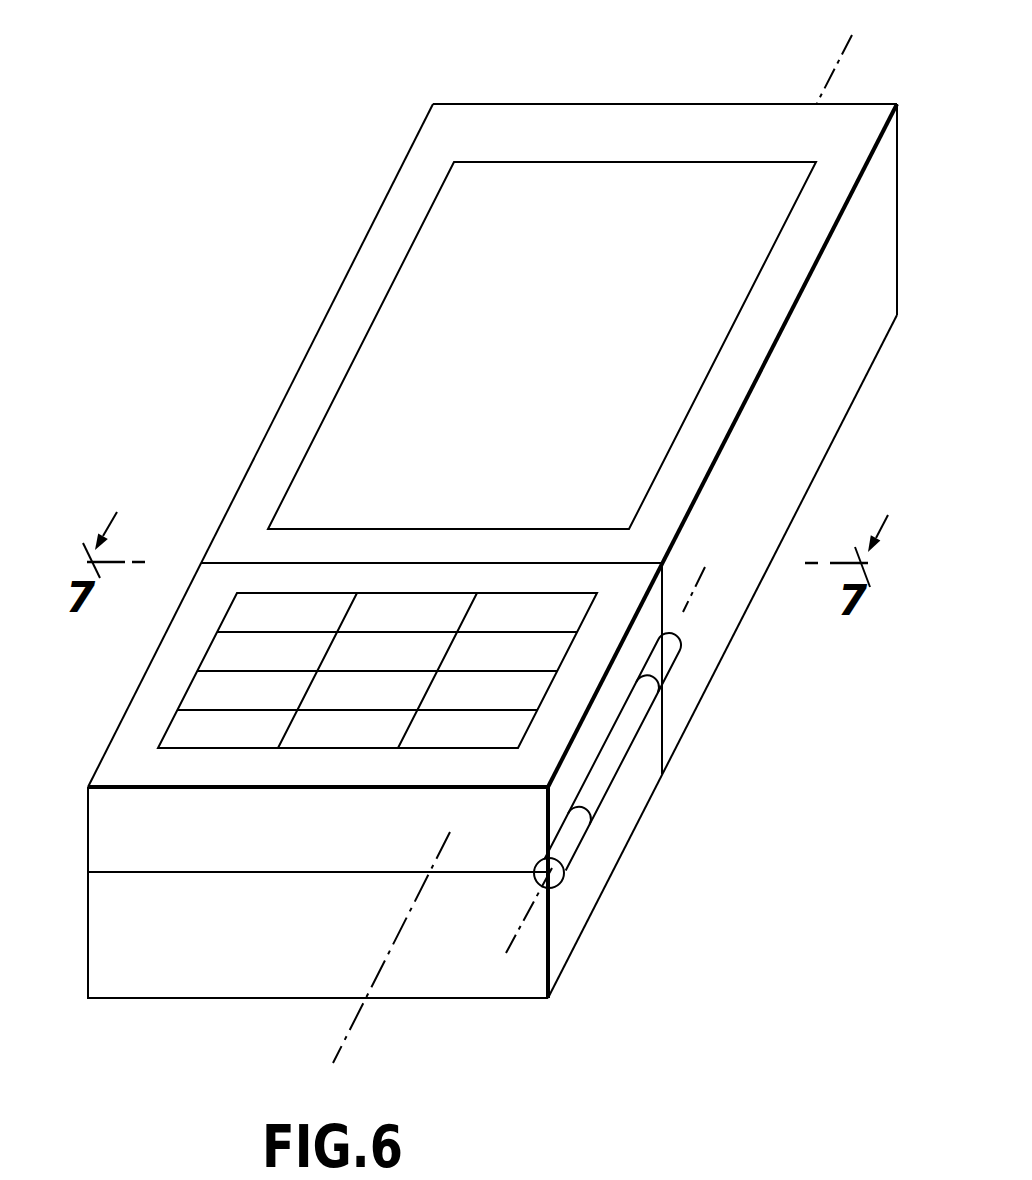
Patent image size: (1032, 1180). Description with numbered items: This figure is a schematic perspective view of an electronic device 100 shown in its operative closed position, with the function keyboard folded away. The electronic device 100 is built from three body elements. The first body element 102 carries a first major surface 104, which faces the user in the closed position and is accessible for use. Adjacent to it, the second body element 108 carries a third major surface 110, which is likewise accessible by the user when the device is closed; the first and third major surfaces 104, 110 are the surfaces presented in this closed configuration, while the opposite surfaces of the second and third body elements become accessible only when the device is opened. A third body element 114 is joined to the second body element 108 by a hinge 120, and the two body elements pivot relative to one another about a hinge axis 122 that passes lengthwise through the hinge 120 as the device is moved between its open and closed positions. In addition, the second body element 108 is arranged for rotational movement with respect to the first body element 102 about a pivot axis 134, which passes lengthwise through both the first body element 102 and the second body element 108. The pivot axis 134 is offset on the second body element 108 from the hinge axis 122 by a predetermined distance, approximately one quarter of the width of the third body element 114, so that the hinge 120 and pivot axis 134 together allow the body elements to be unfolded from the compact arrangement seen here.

The electronic device 100 is at (348, 86).
The first body element 102 is at (500, 103).
The first major surface 104 is at (697, 130).
The second body element 108 is at (88, 833).
The third major surface 110 is at (568, 711).
The third body element 114 is at (514, 1000).
The hinge 120 is at (581, 880).
The hinge axis 122 is at (680, 612).
The pivot axis 134 is at (347, 1030).